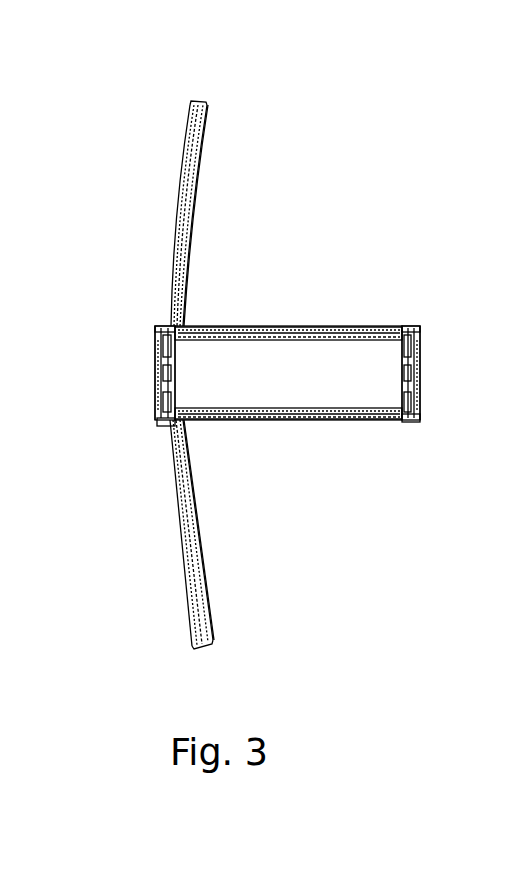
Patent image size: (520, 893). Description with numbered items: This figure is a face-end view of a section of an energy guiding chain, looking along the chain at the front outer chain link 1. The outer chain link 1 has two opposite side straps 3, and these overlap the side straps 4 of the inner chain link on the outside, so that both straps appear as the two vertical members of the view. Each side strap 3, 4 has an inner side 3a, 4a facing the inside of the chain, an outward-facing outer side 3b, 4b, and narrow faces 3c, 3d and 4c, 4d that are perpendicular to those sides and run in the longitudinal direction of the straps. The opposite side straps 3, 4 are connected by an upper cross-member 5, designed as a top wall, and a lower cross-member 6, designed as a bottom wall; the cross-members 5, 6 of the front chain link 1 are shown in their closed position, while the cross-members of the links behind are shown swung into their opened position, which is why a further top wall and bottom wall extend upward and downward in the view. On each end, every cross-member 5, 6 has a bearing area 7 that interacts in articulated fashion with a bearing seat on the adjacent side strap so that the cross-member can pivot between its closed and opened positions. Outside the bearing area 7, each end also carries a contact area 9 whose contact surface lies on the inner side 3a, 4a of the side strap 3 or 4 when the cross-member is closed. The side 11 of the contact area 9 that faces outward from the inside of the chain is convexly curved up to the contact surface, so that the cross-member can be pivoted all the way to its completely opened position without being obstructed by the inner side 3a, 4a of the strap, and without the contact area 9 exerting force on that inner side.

The outer chain link 1 is at (280, 452).
The side strap 3 is at (152, 412).
The inner side 3a is at (178, 376).
The outer side 3b is at (157, 372).
The narrow face 3c is at (158, 326).
The narrow face 3d is at (162, 426).
The side strap 4 is at (427, 405).
The inner side 4a is at (400, 378).
The outer side 4b is at (421, 375).
The narrow face 4c is at (418, 326).
The narrow face 4d is at (416, 424).
The upper cross-member 5 is at (181, 164).
The lower cross-member 6 is at (341, 422).
The bearing area 7 is at (201, 98).
The contact area 9 is at (190, 115).
The side of contact area 11 is at (176, 232).